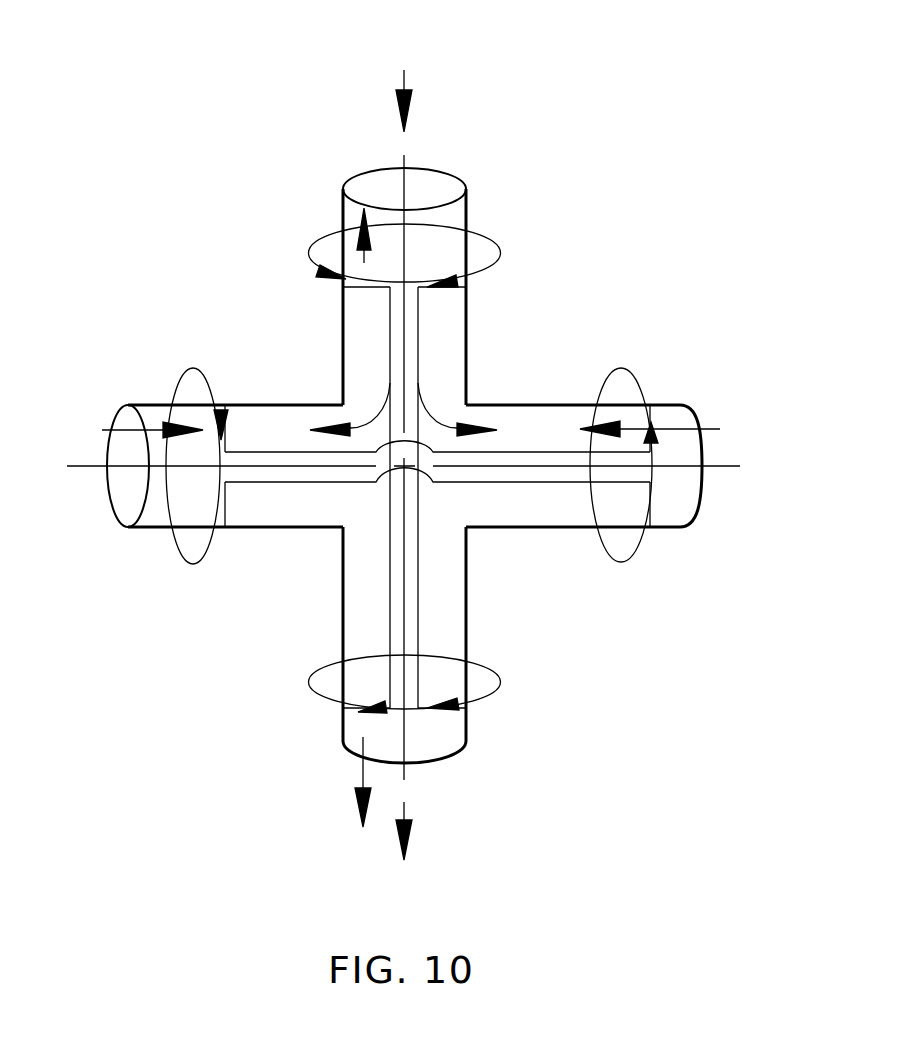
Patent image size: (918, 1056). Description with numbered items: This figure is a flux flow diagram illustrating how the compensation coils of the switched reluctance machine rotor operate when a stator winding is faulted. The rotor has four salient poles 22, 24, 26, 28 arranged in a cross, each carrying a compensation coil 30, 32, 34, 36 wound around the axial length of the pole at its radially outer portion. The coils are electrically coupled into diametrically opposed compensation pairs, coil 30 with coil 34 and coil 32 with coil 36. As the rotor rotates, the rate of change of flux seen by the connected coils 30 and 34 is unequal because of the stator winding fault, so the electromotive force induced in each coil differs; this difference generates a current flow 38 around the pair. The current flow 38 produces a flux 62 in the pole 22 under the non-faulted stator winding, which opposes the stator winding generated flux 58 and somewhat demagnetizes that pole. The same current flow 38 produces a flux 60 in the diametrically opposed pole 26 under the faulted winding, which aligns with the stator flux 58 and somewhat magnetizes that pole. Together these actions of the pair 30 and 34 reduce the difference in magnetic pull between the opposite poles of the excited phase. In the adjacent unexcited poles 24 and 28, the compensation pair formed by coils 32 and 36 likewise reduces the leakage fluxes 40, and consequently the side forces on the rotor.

The salient pole 22 is at (435, 178).
The salient pole 24 is at (700, 510).
The salient pole 26 is at (453, 757).
The salient pole 28 is at (125, 508).
The compensation coil 30 is at (503, 262).
The compensation coil 32 is at (622, 370).
The compensation coil 34 is at (500, 672).
The compensation coil 36 is at (176, 380).
The current flow 38 is at (320, 283).
The leakage fluxes 40 is at (437, 413).
The stator winding generated flux 58 is at (407, 83).
The flux 60 is at (362, 785).
The flux 62 is at (330, 268).